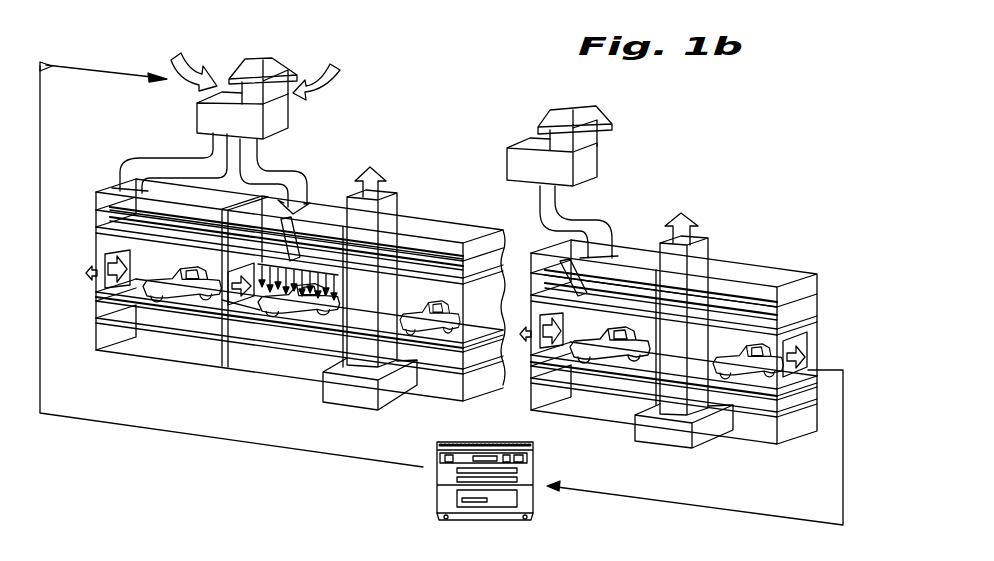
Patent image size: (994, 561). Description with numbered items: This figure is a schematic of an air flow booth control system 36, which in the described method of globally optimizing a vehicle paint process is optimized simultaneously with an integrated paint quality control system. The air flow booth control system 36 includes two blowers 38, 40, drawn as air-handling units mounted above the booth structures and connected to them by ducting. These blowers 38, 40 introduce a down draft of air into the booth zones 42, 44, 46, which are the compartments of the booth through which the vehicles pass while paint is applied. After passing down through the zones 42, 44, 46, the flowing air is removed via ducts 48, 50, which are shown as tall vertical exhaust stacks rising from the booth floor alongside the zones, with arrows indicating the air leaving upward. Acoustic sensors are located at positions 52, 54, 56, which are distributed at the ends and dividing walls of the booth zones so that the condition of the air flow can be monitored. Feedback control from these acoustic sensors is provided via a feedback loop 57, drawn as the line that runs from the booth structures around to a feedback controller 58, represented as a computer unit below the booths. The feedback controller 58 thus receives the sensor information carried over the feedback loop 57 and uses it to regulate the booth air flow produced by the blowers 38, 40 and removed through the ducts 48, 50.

The air flow booth control system 36 is at (760, 138).
The blower 38 is at (600, 165).
The blower 40 is at (282, 76).
The zone 42 is at (760, 342).
The zone 44 is at (327, 290).
The zone 46 is at (205, 262).
The duct 48 is at (682, 270).
The duct 50 is at (373, 218).
The acoustic sensor position 52 is at (797, 345).
The acoustic sensor position 54 is at (233, 310).
The acoustic sensor position 56 is at (106, 255).
The feedback loop 57 is at (208, 438).
The feedback controller 58 is at (437, 494).